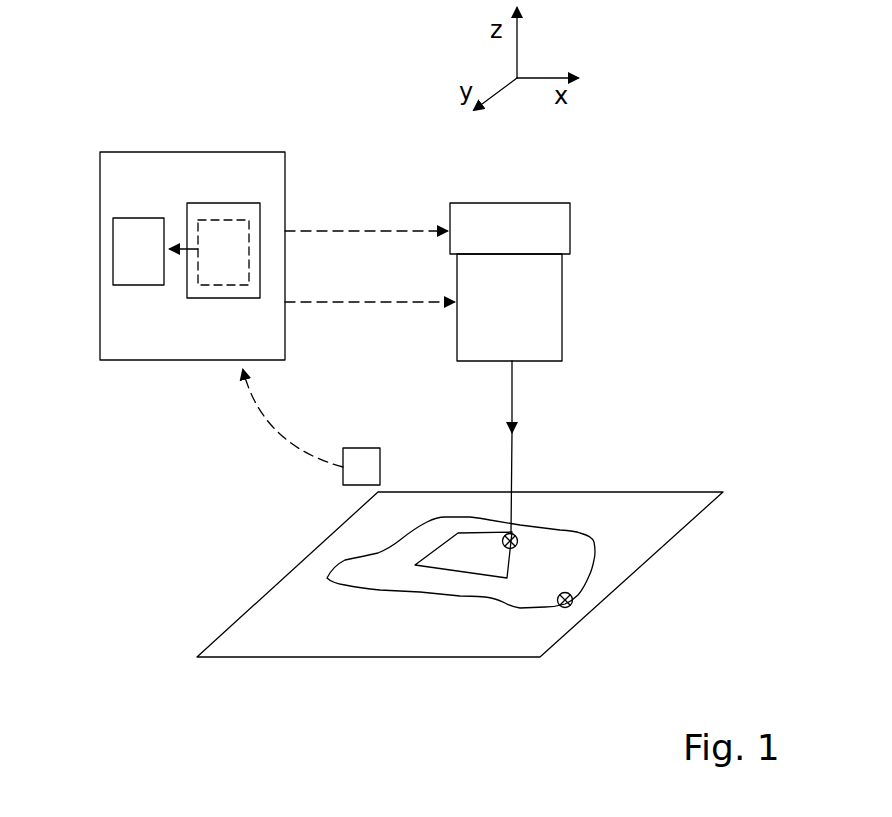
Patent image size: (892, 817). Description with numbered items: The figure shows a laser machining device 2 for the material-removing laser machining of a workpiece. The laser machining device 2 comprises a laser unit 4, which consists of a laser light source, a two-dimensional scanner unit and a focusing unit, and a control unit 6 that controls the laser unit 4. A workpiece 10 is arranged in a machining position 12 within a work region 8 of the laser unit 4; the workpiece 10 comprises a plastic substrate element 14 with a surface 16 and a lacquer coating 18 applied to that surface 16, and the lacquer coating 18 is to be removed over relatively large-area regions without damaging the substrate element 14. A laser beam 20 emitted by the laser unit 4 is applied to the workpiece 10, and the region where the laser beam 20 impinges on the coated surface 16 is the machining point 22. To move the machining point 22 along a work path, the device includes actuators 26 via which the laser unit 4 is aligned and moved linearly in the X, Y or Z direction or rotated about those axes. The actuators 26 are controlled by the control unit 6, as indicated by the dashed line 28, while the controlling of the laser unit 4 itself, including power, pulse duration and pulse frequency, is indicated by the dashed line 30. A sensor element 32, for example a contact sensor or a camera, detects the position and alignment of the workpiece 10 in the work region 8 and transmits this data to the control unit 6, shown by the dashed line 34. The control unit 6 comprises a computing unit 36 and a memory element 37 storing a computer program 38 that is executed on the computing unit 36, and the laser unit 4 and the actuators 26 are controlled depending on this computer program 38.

The laser machining device 2 is at (326, 100).
The laser unit 4 is at (545, 316).
The control unit 6 is at (153, 165).
The work region 8 is at (540, 638).
The workpiece 10 is at (578, 530).
The machining position 12 is at (573, 603).
The substrate element 14 is at (502, 590).
The surface 16 is at (570, 570).
The lacquer coating 18 is at (477, 555).
The laser beam 20 is at (514, 402).
The machining point 22 is at (525, 535).
The actuators 26 is at (555, 228).
The dashed line 28 is at (348, 228).
The dashed line 30 is at (348, 306).
The sensor element 32 is at (365, 457).
The dashed line 34 is at (268, 432).
The computing unit 36 is at (153, 264).
The memory element 37 is at (210, 300).
The computer program 38 is at (228, 228).